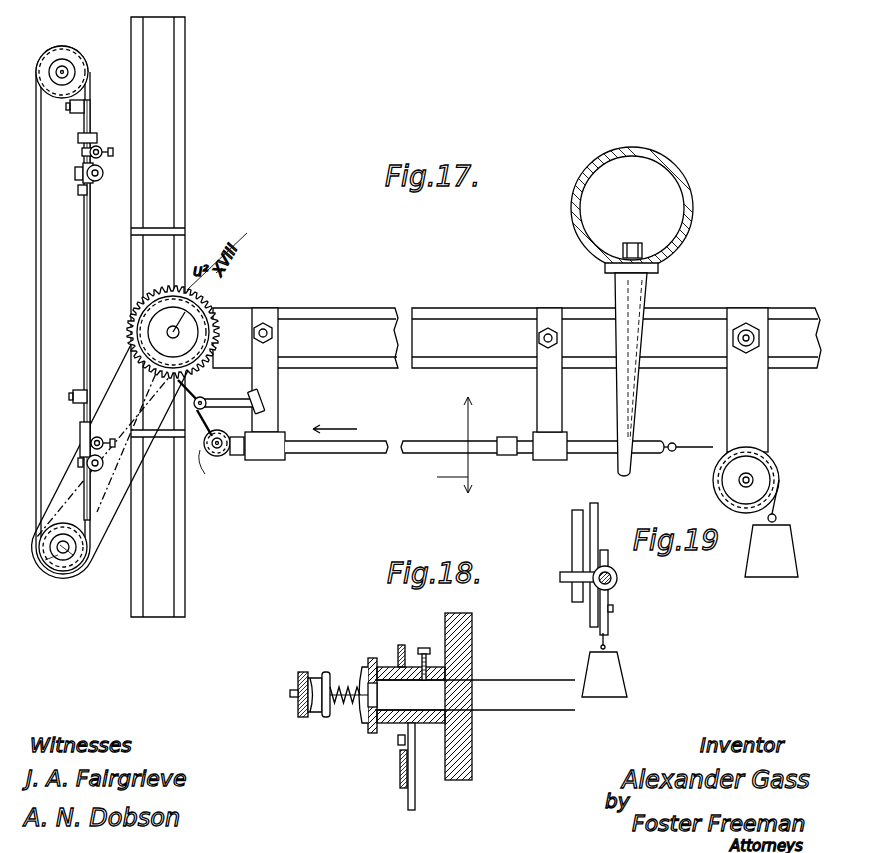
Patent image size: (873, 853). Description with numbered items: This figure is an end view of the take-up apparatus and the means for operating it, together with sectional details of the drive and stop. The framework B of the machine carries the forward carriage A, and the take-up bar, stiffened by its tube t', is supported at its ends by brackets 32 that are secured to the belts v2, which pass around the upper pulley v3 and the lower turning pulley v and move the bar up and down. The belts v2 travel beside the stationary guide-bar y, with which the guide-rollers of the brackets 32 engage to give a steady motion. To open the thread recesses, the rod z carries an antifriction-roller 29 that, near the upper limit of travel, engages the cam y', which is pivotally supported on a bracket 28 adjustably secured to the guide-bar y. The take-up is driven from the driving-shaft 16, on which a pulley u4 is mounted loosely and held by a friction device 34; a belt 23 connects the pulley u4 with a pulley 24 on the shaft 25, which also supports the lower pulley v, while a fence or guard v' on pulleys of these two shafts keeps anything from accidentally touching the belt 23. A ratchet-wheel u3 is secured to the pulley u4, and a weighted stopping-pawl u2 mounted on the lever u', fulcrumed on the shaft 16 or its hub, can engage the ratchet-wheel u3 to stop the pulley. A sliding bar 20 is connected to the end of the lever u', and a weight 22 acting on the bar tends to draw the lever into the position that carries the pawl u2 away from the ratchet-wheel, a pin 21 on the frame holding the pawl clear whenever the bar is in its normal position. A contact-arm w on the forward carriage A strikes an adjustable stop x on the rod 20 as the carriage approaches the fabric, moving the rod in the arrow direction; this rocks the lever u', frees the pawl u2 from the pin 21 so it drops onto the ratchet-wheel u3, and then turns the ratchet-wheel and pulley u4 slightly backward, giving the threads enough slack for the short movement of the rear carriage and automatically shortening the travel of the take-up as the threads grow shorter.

In FIG. 17, the carriage A is at (694, 216).
In FIG. 17, the framework B is at (517, 338).
In FIG. 18, the framework B is at (473, 636).
In FIG. 17, the contact-arm w is at (632, 402).
In FIG. 18, the contact-arm w is at (473, 669).
In FIG. 19, the contact-arm w is at (572, 537).
In FIG. 17, the adjustable stop x is at (504, 459).
In FIG. 19, the adjustable stop x is at (606, 569).
In FIG. 17, the driving-shaft 16 is at (173, 332).
In FIG. 18, the driving-shaft 16 is at (466, 697).
In FIG. 17, the sliding bar 20 is at (425, 441).
In FIG. 19, the sliding bar 20 is at (618, 582).
In FIG. 17, the pin 21 is at (263, 400).
In FIG. 17, the weight 22 is at (752, 556).
In FIG. 19, the weight 22 is at (628, 674).
In FIG. 17, the belt 23 is at (100, 506).
In FIG. 17, the pulley 24 is at (40, 567).
In FIG. 17, the shaft 25 is at (72, 555).
In FIG. 17, the bracket 28 is at (88, 103).
In FIG. 17, the antifriction-roller 29 is at (78, 138).
In FIG. 17, the bracket 32 is at (70, 445).
In FIG. 18, the friction device 34 is at (337, 684).
In FIG. 17, the lower turning pulley v is at (63, 563).
In FIG. 17, the fence or guard v' is at (116, 448).
In FIG. 17, the belt v2 is at (88, 270).
In FIG. 17, the pulley v3 is at (80, 56).
In FIG. 17, the guide-bar y is at (87, 310).
In FIG. 17, the cam y' is at (99, 310).
In FIG. 17, the rod z is at (76, 170).
In FIG. 17, the tube t' is at (98, 317).
In FIG. 17, the lever u' is at (241, 458).
In FIG. 18, the lever u' is at (421, 766).
In FIG. 17, the stopping-pawl u2 is at (232, 399).
In FIG. 18, the stopping-pawl u2 is at (400, 775).
In FIG. 17, the ratchet-wheel u3 is at (218, 307).
In FIG. 18, the ratchet-wheel u3 is at (403, 645).
In FIG. 18, the pulley u4 is at (387, 733).